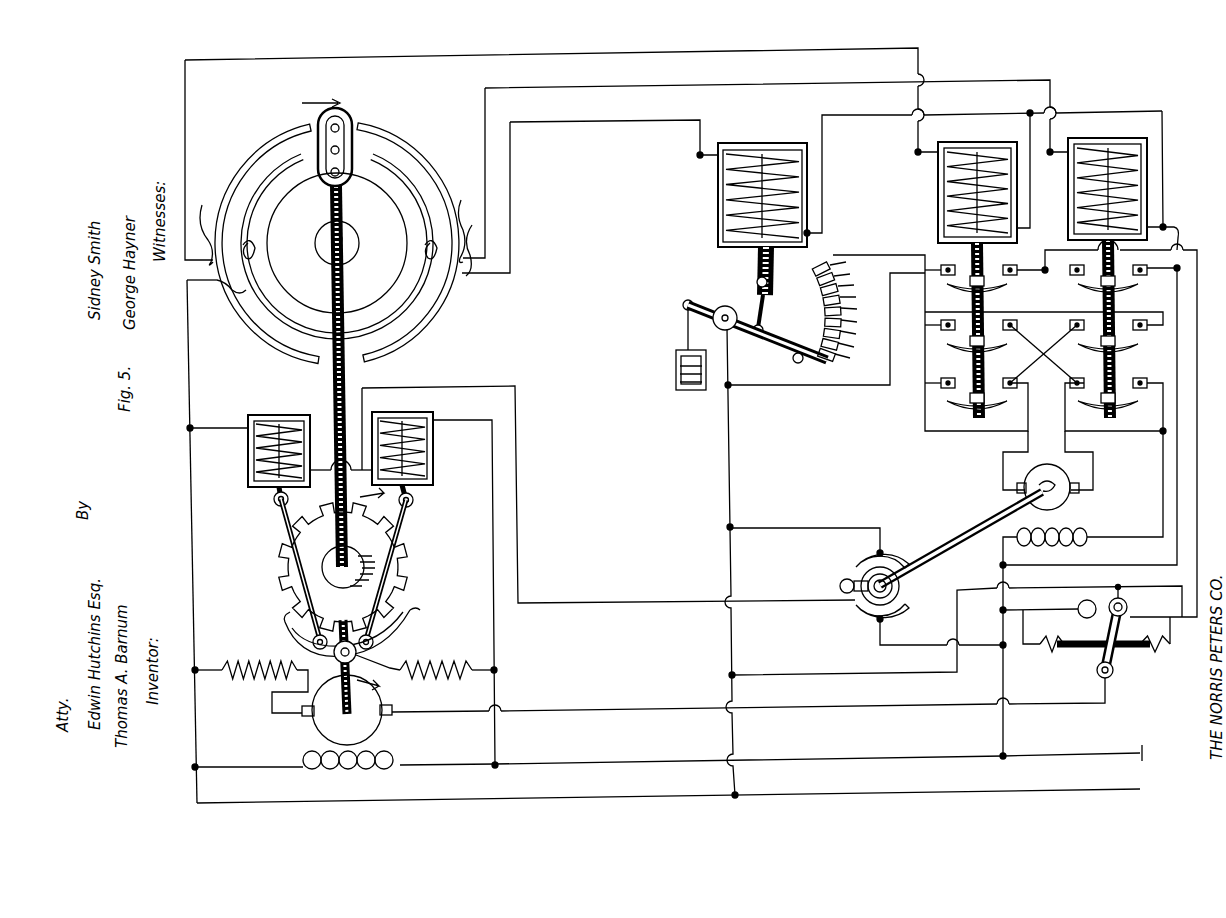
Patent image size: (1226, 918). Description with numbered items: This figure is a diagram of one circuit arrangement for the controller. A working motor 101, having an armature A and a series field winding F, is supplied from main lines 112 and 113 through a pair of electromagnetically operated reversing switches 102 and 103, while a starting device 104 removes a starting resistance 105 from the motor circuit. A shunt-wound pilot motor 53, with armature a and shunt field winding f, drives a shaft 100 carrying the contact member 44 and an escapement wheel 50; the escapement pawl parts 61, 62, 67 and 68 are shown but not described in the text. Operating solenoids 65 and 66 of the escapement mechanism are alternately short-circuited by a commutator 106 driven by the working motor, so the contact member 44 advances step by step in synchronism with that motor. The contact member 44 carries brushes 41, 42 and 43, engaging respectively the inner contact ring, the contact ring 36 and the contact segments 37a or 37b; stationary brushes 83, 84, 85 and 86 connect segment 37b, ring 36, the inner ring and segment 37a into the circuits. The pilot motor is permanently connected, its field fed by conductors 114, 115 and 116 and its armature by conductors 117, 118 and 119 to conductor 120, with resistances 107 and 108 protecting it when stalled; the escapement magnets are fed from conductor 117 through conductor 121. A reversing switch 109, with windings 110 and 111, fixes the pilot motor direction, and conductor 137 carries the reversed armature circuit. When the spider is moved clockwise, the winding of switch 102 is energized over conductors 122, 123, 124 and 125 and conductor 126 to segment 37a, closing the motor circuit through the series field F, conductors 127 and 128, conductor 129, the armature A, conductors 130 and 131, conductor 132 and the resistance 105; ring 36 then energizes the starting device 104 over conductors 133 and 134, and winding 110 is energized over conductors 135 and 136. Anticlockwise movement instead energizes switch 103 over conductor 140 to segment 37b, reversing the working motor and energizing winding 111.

The contact segment 37a is at (305, 138).
The contact segment 37b is at (402, 152).
The contact ring 36 is at (405, 175).
The brush 41 is at (306, 200).
The brush 42 is at (347, 128).
The brush 43 is at (344, 112).
The contact member 44 is at (352, 220).
The contact brush 83 is at (473, 182).
The contact brush 84 is at (461, 220).
The contact brush 85 is at (260, 247).
The contact brush 86 is at (200, 162).
The ratchet wheel 50 is at (404, 568).
The pilot motor 53 is at (358, 710).
The yoke 61 is at (412, 616).
The yoke hub 62 is at (367, 655).
The escapement magnet 65 is at (248, 441).
The escapement magnet 66 is at (404, 578).
The pivot 67 is at (273, 499).
The pawl arm 68 is at (283, 518).
The shaft 100 is at (345, 384).
The working motor 101 is at (988, 524).
The reversing switch 102 is at (977, 270).
The reversing switch 103 is at (1107, 268).
The starting device 104 is at (762, 228).
The starting resistance 105 is at (786, 312).
The commutator 106 is at (819, 575).
The resistance 107 is at (250, 675).
The resistance 108 is at (448, 658).
The reversing switch 109 is at (1134, 601).
The operating winding 110 is at (1086, 642).
The operating winding 111 is at (1160, 674).
The main line 112 is at (1093, 753).
The main line 113 is at (1169, 786).
The conductor 114 is at (703, 752).
The conductor 115 is at (247, 758).
The conductor 116 is at (668, 788).
The conductor 117 is at (748, 695).
The conductor 118 is at (640, 700).
The conductor 119 is at (840, 670).
The conductor 120 is at (731, 448).
The conductor 121 is at (187, 547).
The conductor 122 is at (1003, 668).
The conductor 123 is at (1125, 498).
The conductor 124 is at (1162, 165).
The conductor 125 is at (1032, 200).
The conductor 126 is at (580, 50).
The conductor 127 is at (1100, 472).
The conductor 128 is at (1029, 346).
The conductor 129 is at (1003, 472).
The conductor 130 is at (1093, 443).
The conductor 131 is at (1033, 343).
The conductor 132 is at (868, 256).
The conductor 133 is at (822, 170).
The conductor 134 is at (615, 140).
The conductor 135 is at (1190, 262).
The conductor 136 is at (800, 341).
The conductor 137 is at (1060, 607).
The conductor 140 is at (715, 80).
The armature a is at (346, 727).
The shunt field winding f is at (348, 775).
The series field winding F is at (1045, 642).